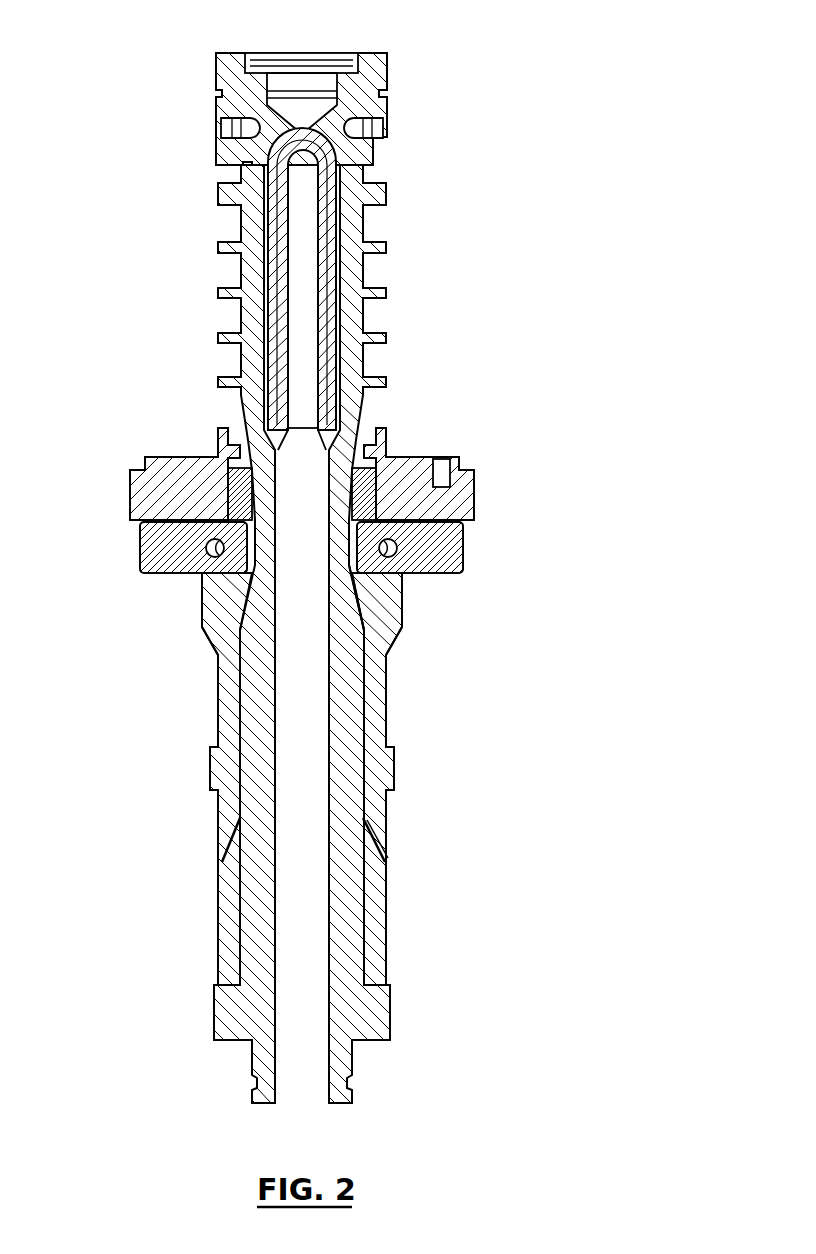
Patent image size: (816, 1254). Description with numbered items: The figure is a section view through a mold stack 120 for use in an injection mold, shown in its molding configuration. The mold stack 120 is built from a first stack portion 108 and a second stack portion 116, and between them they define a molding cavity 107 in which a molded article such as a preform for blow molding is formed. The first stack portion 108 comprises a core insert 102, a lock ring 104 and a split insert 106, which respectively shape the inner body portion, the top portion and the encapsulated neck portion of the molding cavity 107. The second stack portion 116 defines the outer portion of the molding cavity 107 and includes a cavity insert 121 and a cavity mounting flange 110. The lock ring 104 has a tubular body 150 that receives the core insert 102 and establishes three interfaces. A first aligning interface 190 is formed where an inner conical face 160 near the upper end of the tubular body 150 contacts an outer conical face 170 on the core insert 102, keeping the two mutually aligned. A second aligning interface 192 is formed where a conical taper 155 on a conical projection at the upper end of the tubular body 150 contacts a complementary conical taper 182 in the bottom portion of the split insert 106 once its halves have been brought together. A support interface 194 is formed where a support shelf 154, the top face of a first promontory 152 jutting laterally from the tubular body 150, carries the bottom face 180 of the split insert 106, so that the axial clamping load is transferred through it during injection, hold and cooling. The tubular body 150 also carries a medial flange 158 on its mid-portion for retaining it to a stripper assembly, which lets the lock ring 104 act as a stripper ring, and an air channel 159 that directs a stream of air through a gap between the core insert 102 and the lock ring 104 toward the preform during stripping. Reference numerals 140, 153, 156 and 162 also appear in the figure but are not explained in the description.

The core insert 102 is at (375, 712).
The lock ring 104 is at (399, 688).
The split insert 106 is at (478, 555).
The molding cavity 107 is at (338, 266).
The first stack portion 108 is at (361, 706).
The cavity mounting flange 110 is at (492, 496).
The second stack portion 116 is at (446, 578).
The mold stack 120 is at (399, 578).
The cavity insert 121 is at (405, 381).
The insulator terminal end portion 140 is at (398, 156).
The tubular body 150 is at (352, 722).
The first promontory 152 is at (206, 603).
The shell shoulder 153 is at (386, 640).
The support shelf 154 is at (404, 570).
The conical taper 155 is at (482, 512).
The gasket 156 is at (246, 560).
The medial flange 158 is at (394, 772).
The air channel 159 is at (224, 850).
The inner conical face 160 is at (250, 657).
The packing 162 is at (236, 496).
The outer conical face 170 is at (236, 606).
The bottom face 180 is at (390, 578).
The complementary conical taper 182 is at (348, 522).
The first aligning interface 190 is at (366, 652).
The second aligning interface 192 is at (362, 588).
The support interface 194 is at (197, 581).